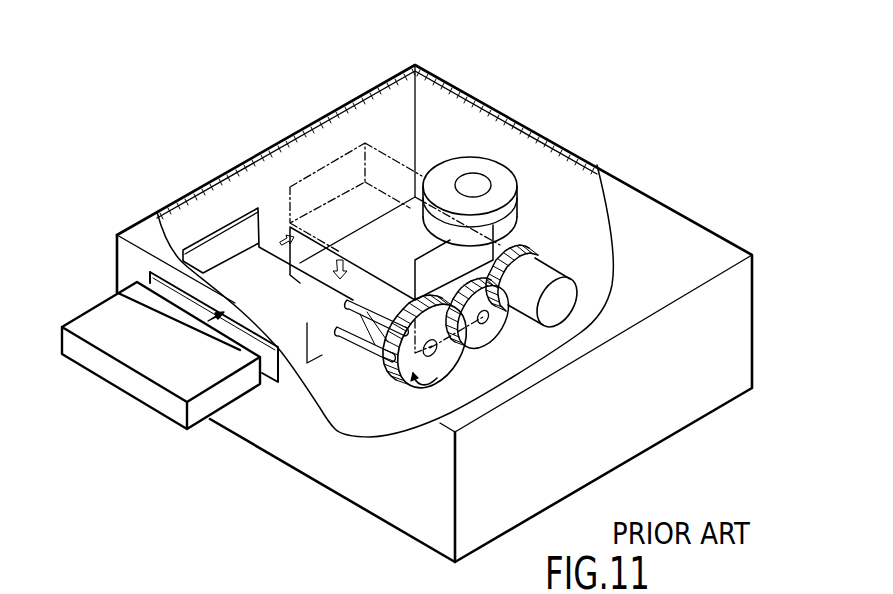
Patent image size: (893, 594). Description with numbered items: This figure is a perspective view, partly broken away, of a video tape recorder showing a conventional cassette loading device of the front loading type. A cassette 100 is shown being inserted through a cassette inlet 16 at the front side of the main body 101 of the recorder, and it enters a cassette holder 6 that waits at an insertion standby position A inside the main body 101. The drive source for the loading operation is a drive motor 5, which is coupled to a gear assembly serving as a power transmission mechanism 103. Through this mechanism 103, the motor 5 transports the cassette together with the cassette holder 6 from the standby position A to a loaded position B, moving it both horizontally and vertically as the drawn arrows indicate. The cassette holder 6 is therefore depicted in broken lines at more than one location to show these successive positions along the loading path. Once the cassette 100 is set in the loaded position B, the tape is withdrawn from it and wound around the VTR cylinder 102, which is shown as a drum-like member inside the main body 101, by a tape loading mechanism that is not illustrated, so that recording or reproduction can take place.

The main body 101 is at (655, 210).
The cassette inlet 16 is at (177, 298).
The cassette 100 is at (103, 310).
The insertion standby position A is at (247, 197).
The cassette holder 6 is at (226, 250).
The power transmission mechanism 103 is at (405, 392).
The loaded position B is at (483, 317).
The drive motor 5 is at (543, 263).
The VTR cylinder 102 is at (502, 182).